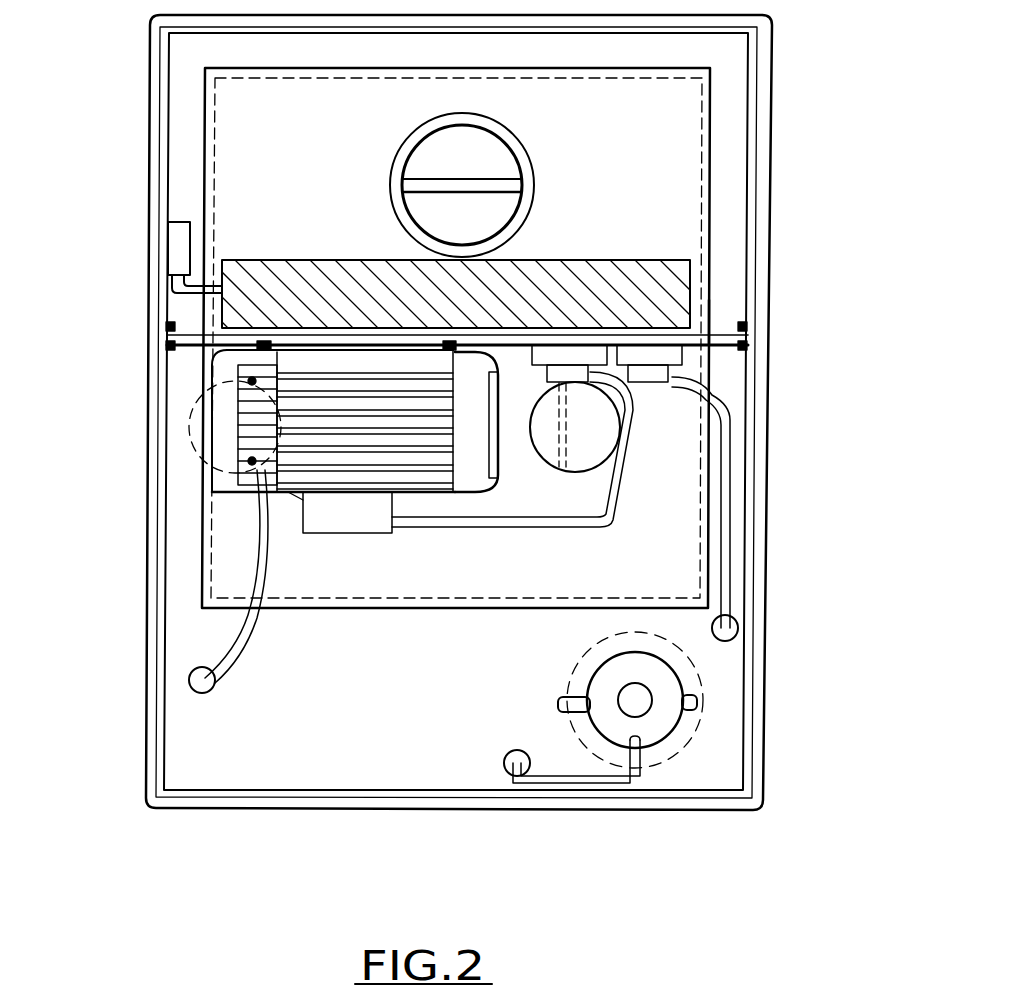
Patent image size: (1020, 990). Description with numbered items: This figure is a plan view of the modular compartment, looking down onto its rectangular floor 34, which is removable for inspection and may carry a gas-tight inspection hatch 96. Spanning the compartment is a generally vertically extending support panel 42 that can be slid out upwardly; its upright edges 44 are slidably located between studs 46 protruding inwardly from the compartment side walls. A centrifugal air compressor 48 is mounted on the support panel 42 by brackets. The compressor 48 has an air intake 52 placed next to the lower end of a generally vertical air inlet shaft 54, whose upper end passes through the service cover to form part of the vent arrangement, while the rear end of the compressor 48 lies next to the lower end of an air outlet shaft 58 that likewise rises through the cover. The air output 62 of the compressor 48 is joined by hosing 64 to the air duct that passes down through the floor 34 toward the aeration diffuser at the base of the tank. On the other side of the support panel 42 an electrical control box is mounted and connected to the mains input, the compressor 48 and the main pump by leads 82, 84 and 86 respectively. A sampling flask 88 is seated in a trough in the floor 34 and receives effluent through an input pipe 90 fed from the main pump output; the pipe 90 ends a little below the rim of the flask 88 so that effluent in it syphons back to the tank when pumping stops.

The floor 34 is at (678, 143).
The support panel 42 is at (713, 327).
The upright edges 44 is at (165, 337).
The studs 46 is at (167, 322).
The centrifugal air compressor 48 is at (423, 470).
The air intake 52 is at (495, 448).
The air inlet shaft 54 is at (607, 430).
The air outlet shaft 58 is at (190, 433).
The air output 62 is at (262, 463).
The hosing 64 is at (247, 643).
The lead 82 is at (727, 518).
The lead 84 is at (612, 500).
The lead 86 is at (185, 290).
The sampling flask 88 is at (665, 715).
The input pipe 90 is at (577, 792).
The inspection hatch 96 is at (495, 165).